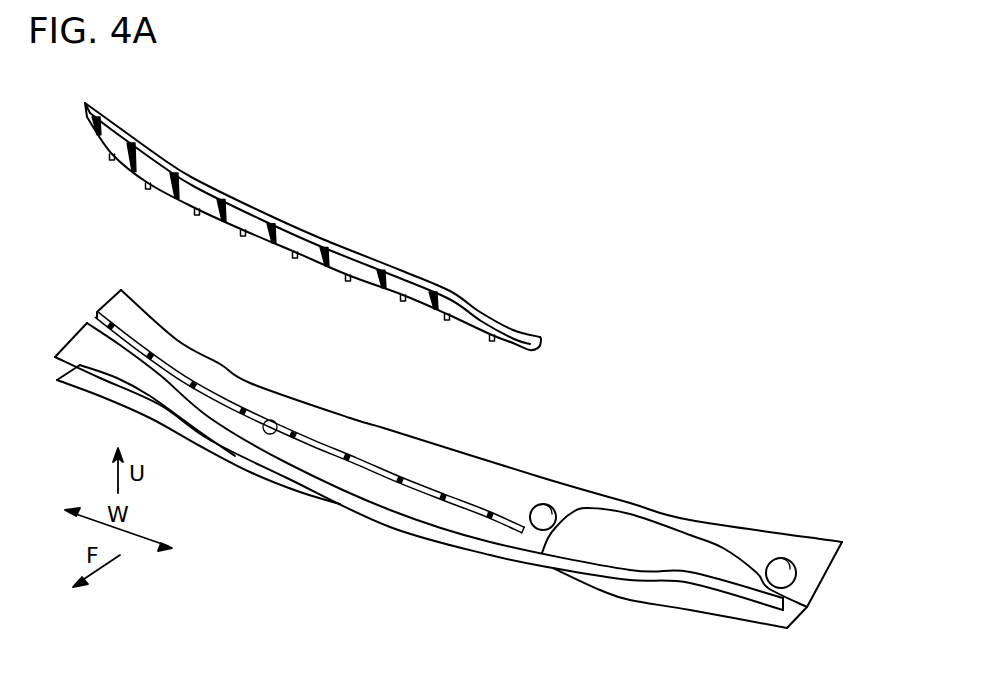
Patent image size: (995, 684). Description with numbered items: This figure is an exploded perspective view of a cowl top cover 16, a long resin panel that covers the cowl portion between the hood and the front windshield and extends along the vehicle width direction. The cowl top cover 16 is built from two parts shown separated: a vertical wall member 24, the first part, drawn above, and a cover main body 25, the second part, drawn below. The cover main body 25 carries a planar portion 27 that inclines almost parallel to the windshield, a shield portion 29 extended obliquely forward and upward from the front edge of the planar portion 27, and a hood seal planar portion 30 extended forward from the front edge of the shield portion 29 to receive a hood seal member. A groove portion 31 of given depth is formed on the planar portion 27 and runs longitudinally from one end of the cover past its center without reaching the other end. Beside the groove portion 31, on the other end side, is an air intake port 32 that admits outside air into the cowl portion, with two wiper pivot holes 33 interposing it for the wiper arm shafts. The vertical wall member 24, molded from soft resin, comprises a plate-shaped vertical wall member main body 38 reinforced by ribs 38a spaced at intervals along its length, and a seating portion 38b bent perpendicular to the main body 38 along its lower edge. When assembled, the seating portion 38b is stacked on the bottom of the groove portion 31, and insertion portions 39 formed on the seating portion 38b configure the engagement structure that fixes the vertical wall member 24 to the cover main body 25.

The cowl top cover 16 is at (596, 351).
The vertical wall member 24 is at (413, 277).
The cover main body 25 is at (468, 470).
The planar portion 27 is at (375, 440).
The shield portion 29 is at (286, 459).
The hood seal planar portion 30 is at (359, 508).
The groove portion 31 is at (270, 420).
The air intake port 32 is at (649, 532).
The wiper pivot hole 33 is at (549, 503).
The vertical wall member main body 38 is at (293, 232).
The rib 38a is at (323, 256).
The seating portion 38b is at (371, 279).
The insertion portion 39 is at (250, 236).